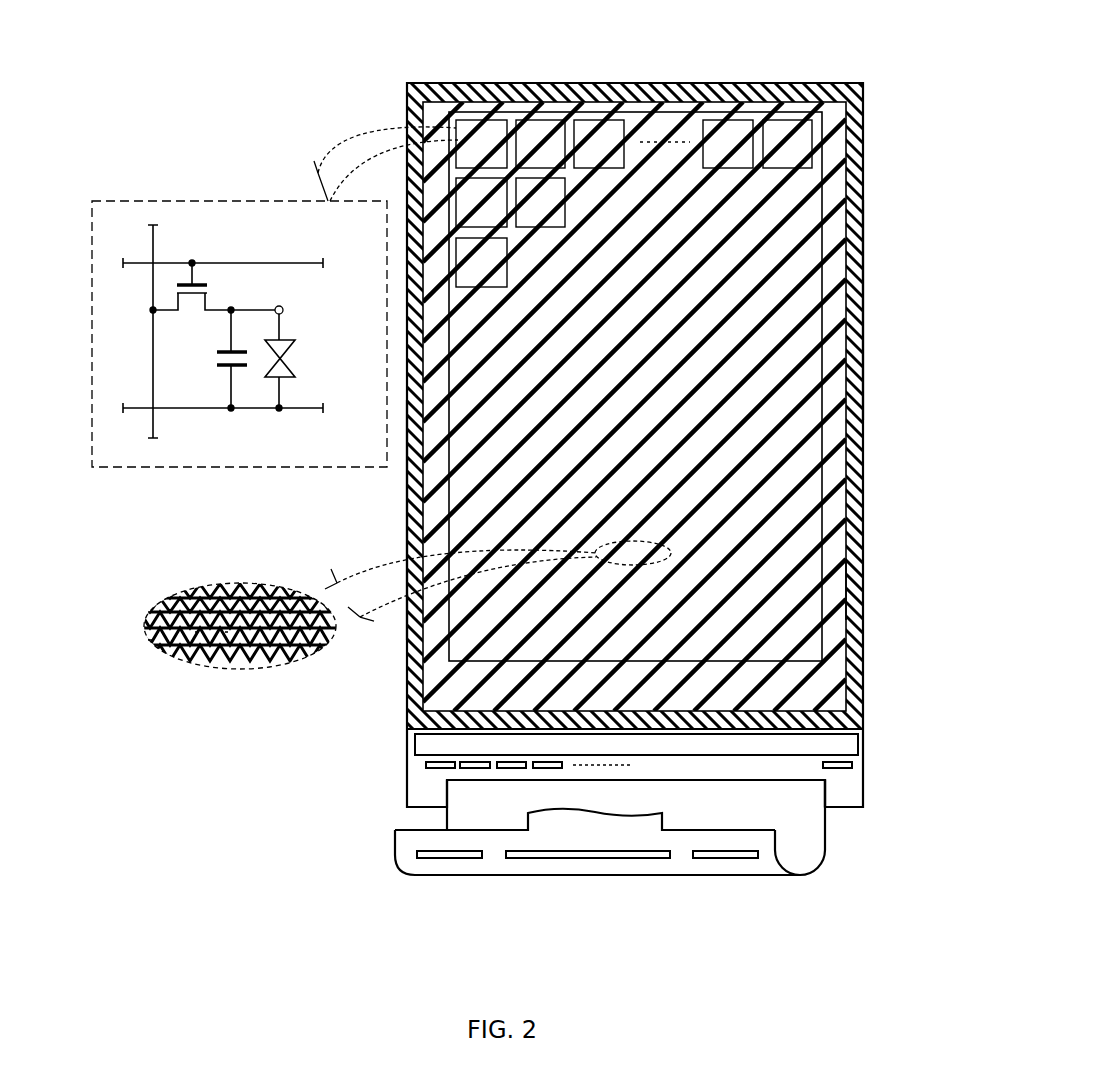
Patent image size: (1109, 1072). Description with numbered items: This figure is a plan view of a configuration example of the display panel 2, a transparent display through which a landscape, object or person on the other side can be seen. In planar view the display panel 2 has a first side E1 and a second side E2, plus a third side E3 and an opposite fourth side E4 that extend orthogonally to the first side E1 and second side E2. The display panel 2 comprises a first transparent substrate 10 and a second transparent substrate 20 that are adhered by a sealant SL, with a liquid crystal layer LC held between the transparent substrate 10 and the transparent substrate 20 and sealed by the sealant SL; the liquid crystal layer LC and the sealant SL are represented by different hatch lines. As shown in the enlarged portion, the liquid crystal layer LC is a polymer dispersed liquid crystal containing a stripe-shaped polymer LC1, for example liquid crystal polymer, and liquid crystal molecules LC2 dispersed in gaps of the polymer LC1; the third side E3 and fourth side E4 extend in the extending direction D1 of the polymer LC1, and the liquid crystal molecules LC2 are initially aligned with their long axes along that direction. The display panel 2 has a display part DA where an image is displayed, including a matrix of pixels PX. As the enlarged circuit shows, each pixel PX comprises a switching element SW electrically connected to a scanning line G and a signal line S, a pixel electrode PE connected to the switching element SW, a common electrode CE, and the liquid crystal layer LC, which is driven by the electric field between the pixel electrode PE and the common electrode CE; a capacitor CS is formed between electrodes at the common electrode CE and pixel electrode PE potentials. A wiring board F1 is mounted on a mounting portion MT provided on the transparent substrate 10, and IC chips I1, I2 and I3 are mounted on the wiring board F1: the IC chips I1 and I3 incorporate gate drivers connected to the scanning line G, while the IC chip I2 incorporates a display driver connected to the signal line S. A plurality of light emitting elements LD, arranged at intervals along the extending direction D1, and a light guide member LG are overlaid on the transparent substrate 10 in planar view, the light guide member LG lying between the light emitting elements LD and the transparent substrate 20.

The display panel 2 is at (862, 83).
The transparent substrate 20 is at (858, 714).
The transparent substrate 10 is at (862, 784).
The pixel PX is at (592, 110).
The scanning line G is at (135, 262).
The signal line S is at (152, 345).
The switching element SW is at (214, 301).
The pixel electrode PE is at (284, 311).
The common electrode CE is at (304, 410).
The capacitor CS is at (216, 357).
The liquid crystal layer LC is at (838, 678).
The polymer LC1 is at (148, 640).
The liquid crystal molecules LC2 is at (226, 634).
The extending direction D1 is at (247, 598).
The display part DA is at (826, 478).
The sealant SL is at (856, 585).
The first side E1 is at (405, 513).
The second side E2 is at (865, 298).
The third side E3 is at (766, 82).
The fourth side E4 is at (858, 812).
The light guide member LG is at (414, 744).
The light emitting elements LD is at (438, 768).
The mounting portion MT is at (832, 792).
The wiring board F1 is at (812, 876).
The IC chip I1 is at (445, 860).
The IC chip I2 is at (598, 860).
The IC chip I3 is at (725, 860).